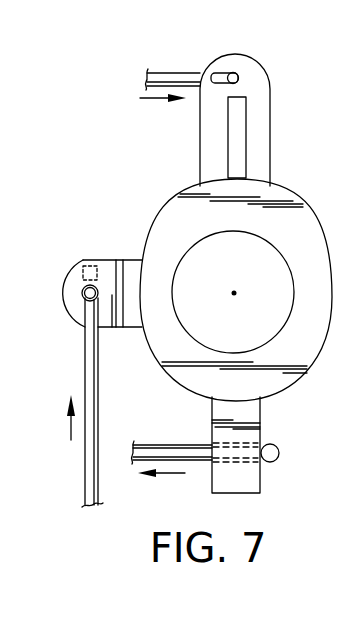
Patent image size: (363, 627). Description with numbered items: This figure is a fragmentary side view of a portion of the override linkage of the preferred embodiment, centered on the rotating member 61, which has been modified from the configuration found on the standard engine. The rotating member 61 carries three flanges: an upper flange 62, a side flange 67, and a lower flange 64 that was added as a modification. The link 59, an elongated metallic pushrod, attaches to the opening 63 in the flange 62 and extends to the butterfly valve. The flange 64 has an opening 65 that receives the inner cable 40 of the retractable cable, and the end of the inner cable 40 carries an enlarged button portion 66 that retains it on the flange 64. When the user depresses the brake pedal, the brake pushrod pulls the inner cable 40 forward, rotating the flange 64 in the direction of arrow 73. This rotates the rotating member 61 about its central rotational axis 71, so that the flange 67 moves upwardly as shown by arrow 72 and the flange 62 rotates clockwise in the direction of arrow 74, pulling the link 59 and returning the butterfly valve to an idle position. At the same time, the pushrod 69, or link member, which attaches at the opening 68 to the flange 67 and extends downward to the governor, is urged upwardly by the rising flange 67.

The inner cable 40 is at (157, 445).
The link 59 is at (168, 73).
The rotating member 61 is at (293, 202).
The flange 62 is at (260, 123).
The opening 63 is at (244, 72).
The flange 64 is at (238, 494).
The opening 65 is at (247, 466).
The enlarged button portion 66 is at (281, 451).
The flange 67 is at (110, 268).
The opening 68 is at (82, 296).
The pushrod 69 is at (100, 412).
The central rotational axis 71 is at (240, 293).
The arrow 72 is at (71, 432).
The arrow 73 is at (168, 476).
The arrow 74 is at (158, 100).